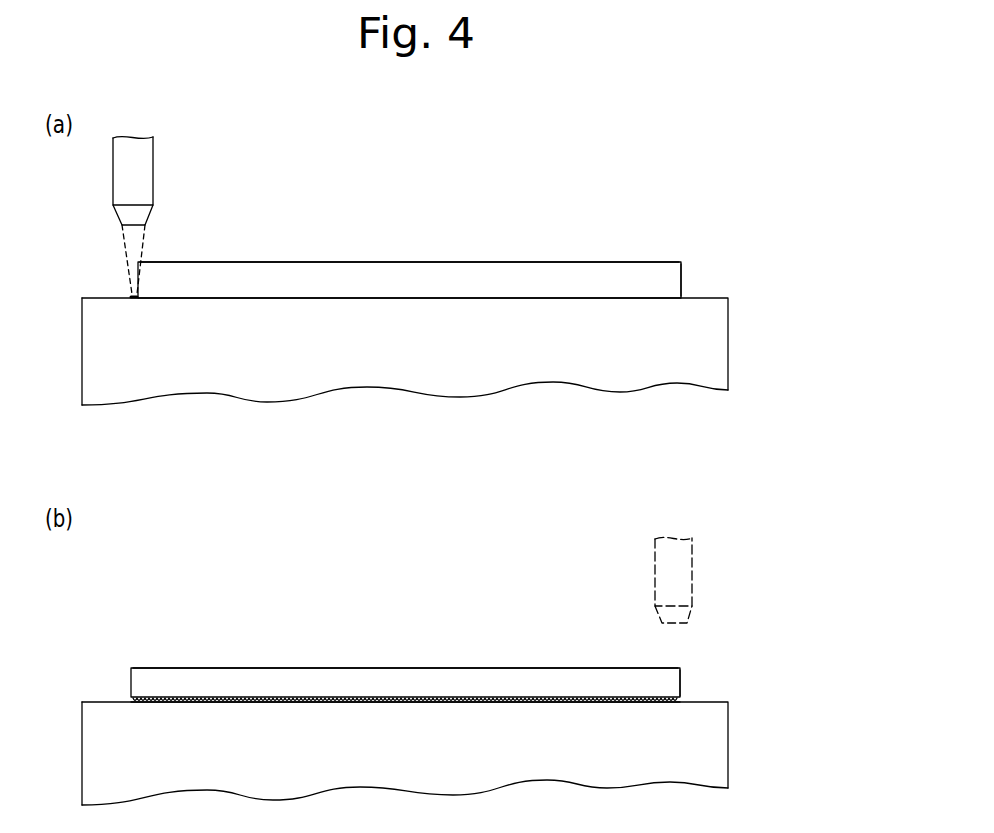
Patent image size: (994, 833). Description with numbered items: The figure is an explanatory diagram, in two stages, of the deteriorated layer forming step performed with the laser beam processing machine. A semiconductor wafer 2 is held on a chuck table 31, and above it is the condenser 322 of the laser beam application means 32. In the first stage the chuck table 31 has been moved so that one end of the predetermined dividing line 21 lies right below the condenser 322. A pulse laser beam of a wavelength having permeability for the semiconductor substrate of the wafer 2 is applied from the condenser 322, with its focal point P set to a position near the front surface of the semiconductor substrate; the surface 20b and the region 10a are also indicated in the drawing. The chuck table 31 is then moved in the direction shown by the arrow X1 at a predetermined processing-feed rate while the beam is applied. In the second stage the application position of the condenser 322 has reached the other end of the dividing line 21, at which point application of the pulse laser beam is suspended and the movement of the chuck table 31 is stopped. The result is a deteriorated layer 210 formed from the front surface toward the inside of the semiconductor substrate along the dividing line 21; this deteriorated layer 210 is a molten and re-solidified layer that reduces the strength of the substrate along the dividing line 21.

The semiconductor wafer 2 is at (449, 446).
The upper surface of workpiece 20b is at (495, 260).
The dividing line 21 is at (683, 289).
The chuck table 31 is at (721, 359).
The laser beam application means 32 is at (451, 353).
The condenser 322 is at (163, 142).
The focal point P is at (132, 295).
The deteriorated layer 210 is at (365, 697).
The mounting surface of table 10a is at (443, 705).
The arrow X1 is at (507, 450).